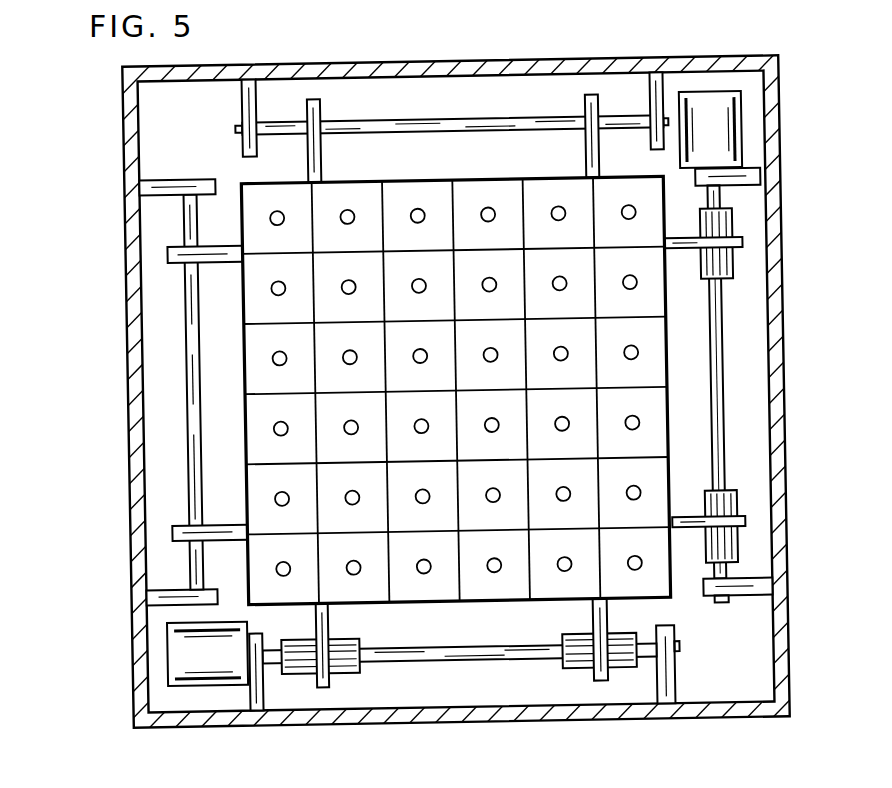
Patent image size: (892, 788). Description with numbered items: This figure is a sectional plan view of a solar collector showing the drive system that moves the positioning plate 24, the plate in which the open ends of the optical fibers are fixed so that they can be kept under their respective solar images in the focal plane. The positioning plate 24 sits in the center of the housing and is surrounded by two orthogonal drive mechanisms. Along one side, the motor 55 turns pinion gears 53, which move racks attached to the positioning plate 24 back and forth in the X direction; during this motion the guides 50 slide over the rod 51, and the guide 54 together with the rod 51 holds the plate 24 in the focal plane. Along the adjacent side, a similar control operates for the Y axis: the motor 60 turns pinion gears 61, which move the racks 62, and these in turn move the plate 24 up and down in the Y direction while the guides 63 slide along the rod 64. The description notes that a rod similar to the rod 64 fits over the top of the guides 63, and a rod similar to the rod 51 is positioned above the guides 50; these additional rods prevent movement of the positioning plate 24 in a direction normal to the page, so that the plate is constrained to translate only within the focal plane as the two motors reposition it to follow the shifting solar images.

The positioning plate 24 is at (667, 353).
The guides 50 is at (170, 251).
The rod 51 is at (187, 217).
The pinion gears 53 is at (735, 231).
The guide 54 is at (745, 252).
The motor 55 is at (746, 120).
The motor 60 is at (163, 632).
The pinion gears 61 is at (350, 671).
The racks 62 is at (324, 621).
The guides 63 is at (325, 115).
The rod 64 is at (371, 133).